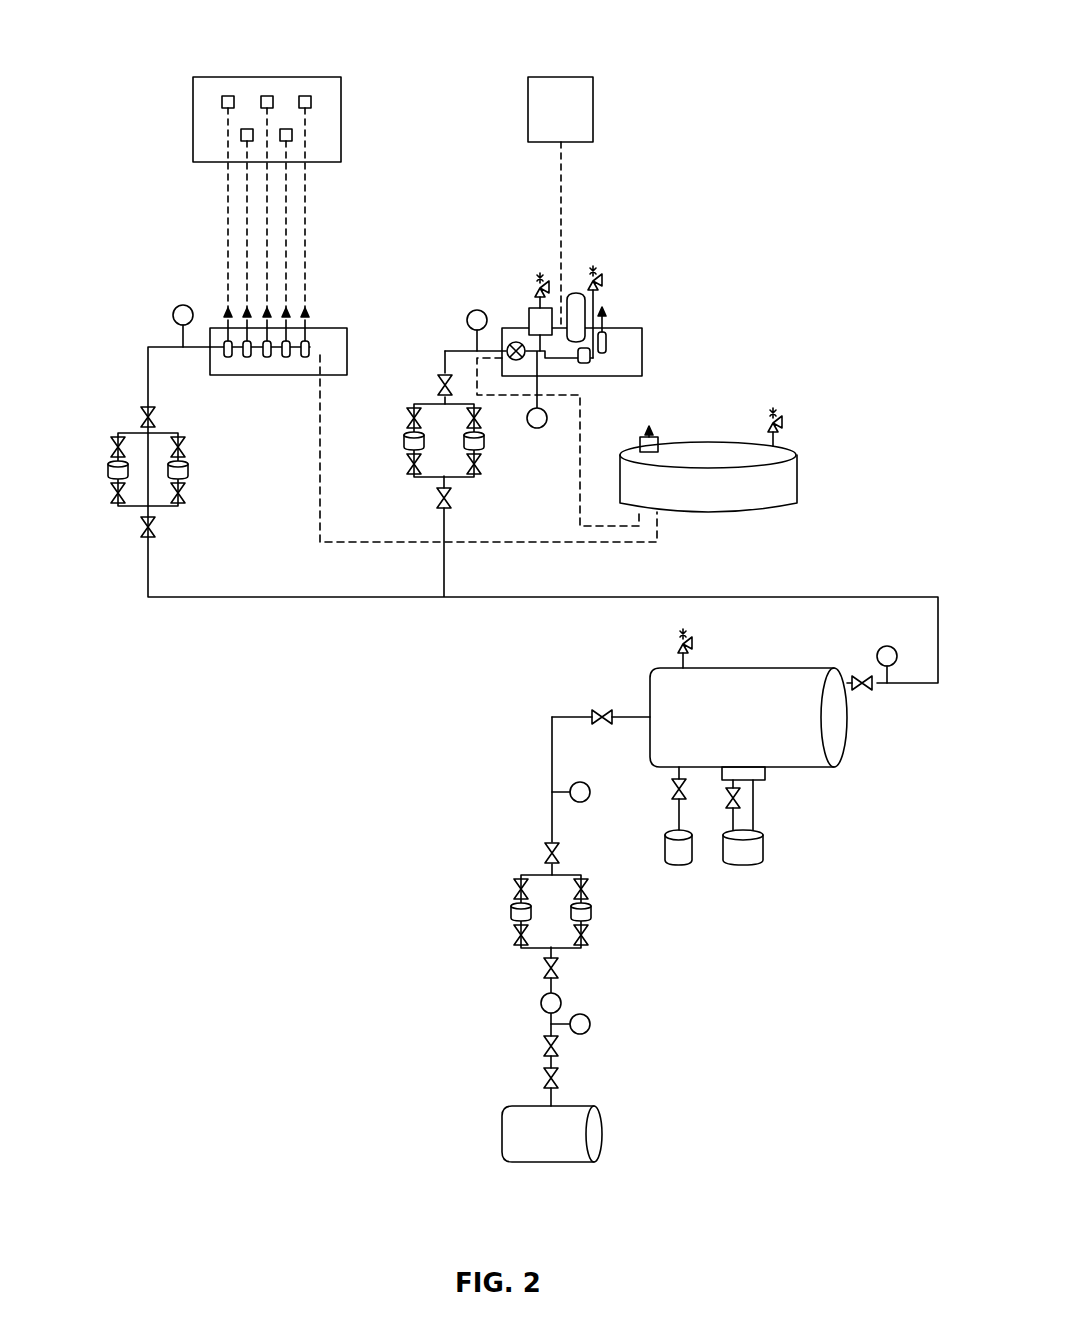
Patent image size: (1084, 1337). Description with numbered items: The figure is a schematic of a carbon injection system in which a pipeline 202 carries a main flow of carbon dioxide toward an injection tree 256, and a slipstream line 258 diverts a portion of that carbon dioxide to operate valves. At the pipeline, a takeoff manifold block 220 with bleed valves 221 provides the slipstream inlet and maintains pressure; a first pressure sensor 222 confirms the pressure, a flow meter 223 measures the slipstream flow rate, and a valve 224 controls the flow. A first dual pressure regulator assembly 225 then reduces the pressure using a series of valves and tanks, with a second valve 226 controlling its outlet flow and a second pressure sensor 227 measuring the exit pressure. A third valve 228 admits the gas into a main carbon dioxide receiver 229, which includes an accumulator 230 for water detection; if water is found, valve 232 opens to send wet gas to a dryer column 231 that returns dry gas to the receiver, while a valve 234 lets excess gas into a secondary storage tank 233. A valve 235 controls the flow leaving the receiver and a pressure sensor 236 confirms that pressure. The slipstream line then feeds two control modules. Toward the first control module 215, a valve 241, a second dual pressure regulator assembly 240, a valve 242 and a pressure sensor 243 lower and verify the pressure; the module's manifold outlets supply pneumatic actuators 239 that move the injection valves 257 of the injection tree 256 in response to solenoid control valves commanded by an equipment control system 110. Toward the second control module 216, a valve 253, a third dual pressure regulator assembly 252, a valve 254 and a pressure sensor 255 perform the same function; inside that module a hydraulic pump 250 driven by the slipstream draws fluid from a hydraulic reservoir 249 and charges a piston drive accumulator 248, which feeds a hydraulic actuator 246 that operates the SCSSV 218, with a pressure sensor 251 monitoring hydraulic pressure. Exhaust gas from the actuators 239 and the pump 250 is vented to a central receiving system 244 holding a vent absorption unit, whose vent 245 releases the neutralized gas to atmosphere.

The equipment control system 110 is at (150, 650).
The pipeline 202 is at (603, 1136).
The first control module 215 is at (334, 328).
The second control module 216 is at (642, 368).
The SCSSV 218 is at (561, 77).
The takeoff manifold block 220 is at (547, 1064).
The valves 221 is at (547, 1048).
The first pressure sensor 222 is at (591, 1027).
The flow meter 223 is at (542, 1000).
The valve 224 is at (556, 975).
The first dual pressure regulator assembly 225 is at (494, 908).
The second valve 226 is at (548, 850).
The second pressure sensor 227 is at (580, 803).
The third valve 228 is at (594, 710).
The main CO2 receiver 229 is at (748, 667).
The accumulator 230 is at (767, 778).
The dryer column 231 is at (764, 848).
The valve 232 is at (728, 806).
The secondary storage tank 233 is at (677, 867).
The valve 234 is at (674, 782).
The valve 235 is at (866, 689).
The pressure sensor 236 is at (886, 646).
The pneumatic actuators 239 is at (248, 358).
The second dual pressure regulator assembly 240 is at (166, 518).
The valve 241 is at (146, 535).
The valve 242 is at (146, 412).
The pressure sensor 243 is at (183, 305).
The central receiving system 244 is at (798, 478).
The vent 245 is at (782, 422).
The hydraulic actuator 246 is at (608, 337).
The piston drive accumulator 248 is at (580, 292).
The hydraulic reservoir 249 is at (536, 300).
The hydraulic pump 250 is at (514, 342).
The pressure sensor 251 is at (537, 428).
The third dual pressure regulator assembly 252 is at (404, 455).
The valve 253 is at (441, 505).
The valve 254 is at (441, 383).
The pressure sensor 255 is at (476, 310).
The injection tree 256 is at (193, 120).
The injection tree valves 257 is at (227, 95).
The slipstream line 258 is at (398, 600).